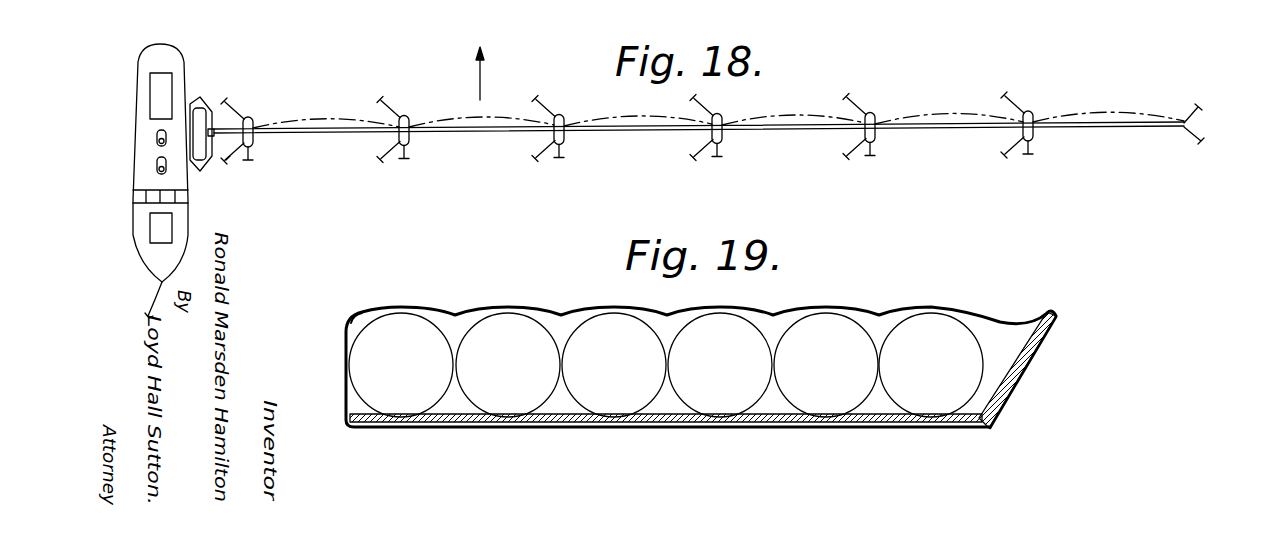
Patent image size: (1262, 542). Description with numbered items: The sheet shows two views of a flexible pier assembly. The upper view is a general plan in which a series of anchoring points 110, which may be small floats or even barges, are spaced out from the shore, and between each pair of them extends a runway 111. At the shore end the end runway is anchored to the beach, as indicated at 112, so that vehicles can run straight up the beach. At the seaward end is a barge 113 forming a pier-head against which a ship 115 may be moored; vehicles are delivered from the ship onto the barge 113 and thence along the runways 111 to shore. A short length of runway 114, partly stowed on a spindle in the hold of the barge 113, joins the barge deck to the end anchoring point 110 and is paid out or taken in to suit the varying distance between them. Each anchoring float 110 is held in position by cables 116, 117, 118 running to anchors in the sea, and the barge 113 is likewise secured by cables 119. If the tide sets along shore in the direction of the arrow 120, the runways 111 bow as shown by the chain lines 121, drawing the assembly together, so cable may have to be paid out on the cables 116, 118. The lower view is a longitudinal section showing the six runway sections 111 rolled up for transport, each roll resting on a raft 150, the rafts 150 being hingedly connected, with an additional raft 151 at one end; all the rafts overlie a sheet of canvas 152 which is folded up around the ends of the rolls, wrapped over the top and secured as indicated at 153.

In FIG. 18, the anchoring points 110 is at (275, 105).
In FIG. 18, the runway 111 is at (327, 134).
In FIG. 19, the runway 111 is at (474, 318).
In FIG. 18, the shore anchorage 112 is at (1193, 112).
In FIG. 18, the barge 113 is at (207, 166).
In FIG. 18, the runway length 114 is at (236, 156).
In FIG. 18, the ship 115 is at (182, 48).
In FIG. 18, the cable 116 is at (382, 161).
In FIG. 18, the cable 117 is at (408, 152).
In FIG. 18, the cable 118 is at (230, 103).
In FIG. 18, the cables 119 is at (200, 99).
In FIG. 18, the arrow 120 is at (498, 105).
In FIG. 18, the chain lines 121 is at (322, 119).
In FIG. 19, the raft 150 is at (408, 428).
In FIG. 19, the additional raft 151 is at (1030, 372).
In FIG. 19, the sheet of canvas 152 is at (490, 422).
In FIG. 19, the securing 153 is at (377, 310).